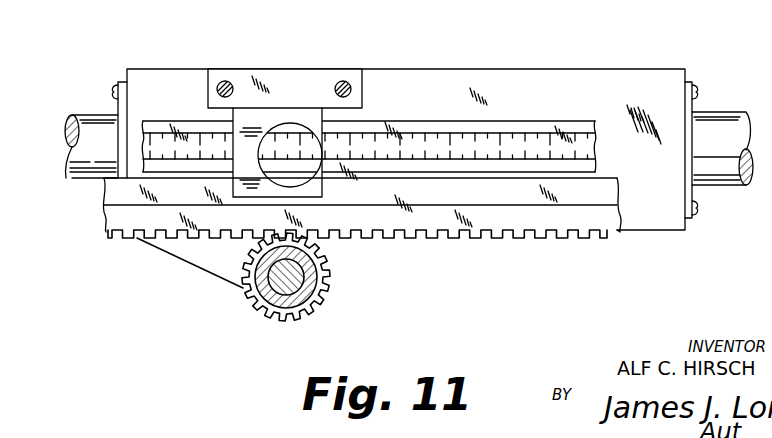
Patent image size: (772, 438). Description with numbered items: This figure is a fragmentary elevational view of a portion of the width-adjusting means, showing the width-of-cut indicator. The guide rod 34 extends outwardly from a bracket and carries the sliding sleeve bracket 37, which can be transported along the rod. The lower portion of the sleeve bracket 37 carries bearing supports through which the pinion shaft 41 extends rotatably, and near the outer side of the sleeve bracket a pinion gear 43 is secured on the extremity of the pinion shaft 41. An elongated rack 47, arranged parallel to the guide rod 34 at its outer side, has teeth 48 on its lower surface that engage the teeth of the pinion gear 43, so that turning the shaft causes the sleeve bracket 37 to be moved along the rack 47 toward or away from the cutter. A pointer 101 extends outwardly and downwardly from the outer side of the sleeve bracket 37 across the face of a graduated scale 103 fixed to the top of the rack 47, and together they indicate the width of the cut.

The guide rod 34 is at (88, 132).
The sliding sleeve bracket 37 is at (528, 83).
The pinion shaft 41 is at (302, 280).
The pinion gear 43 is at (320, 302).
The rack 47 is at (120, 224).
The teeth 48 is at (455, 237).
The pointer 101 is at (270, 115).
The graduated scale 103 is at (157, 137).